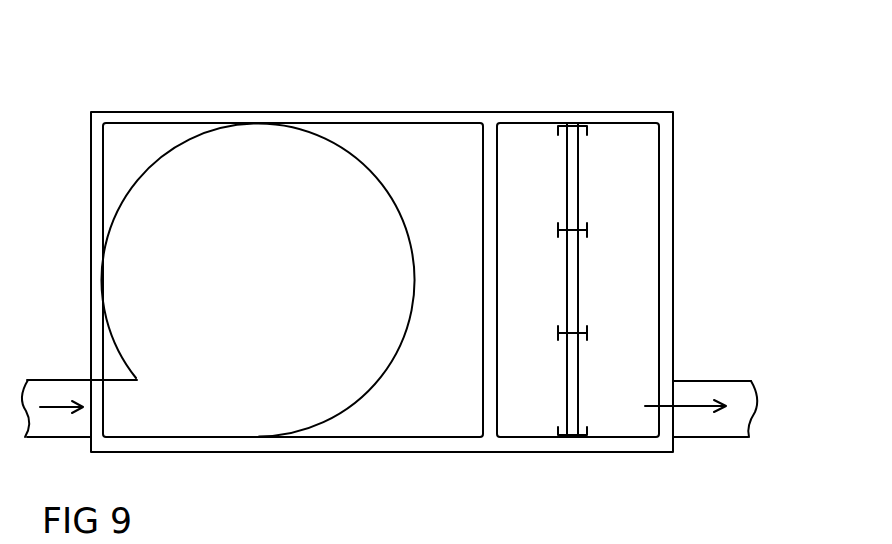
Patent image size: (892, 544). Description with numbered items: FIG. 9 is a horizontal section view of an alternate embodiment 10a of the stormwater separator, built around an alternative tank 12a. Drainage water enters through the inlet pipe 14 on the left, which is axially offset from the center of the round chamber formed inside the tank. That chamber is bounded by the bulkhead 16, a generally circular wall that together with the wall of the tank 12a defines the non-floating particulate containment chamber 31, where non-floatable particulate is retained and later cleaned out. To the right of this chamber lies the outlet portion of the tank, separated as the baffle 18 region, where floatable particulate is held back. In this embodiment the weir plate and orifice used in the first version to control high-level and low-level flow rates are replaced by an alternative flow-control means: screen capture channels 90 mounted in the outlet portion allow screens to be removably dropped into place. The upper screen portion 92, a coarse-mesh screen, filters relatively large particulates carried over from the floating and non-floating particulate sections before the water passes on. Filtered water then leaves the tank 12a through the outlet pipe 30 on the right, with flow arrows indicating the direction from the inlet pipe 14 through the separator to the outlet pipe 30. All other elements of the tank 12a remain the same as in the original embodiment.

The alternate embodiment 10a is at (196, 58).
The alternative tank 12a is at (324, 86).
The inlet pipe 14 is at (65, 379).
The bulkhead 16 is at (381, 183).
The baffle 18 is at (498, 150).
The non-floating particulate containment chamber 31 is at (259, 266).
The outlet pipe 30 is at (716, 438).
The screen capture channels 90 is at (591, 133).
The upper screen portion 92 is at (566, 188).